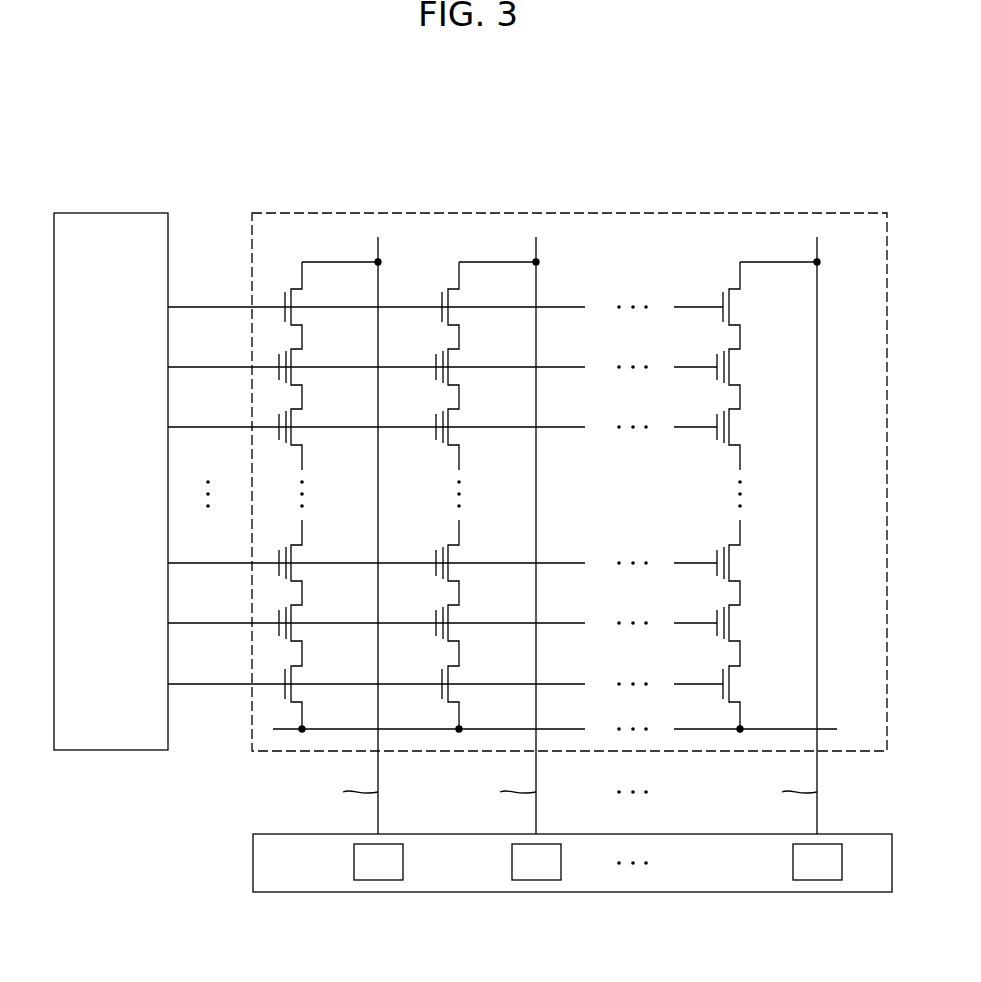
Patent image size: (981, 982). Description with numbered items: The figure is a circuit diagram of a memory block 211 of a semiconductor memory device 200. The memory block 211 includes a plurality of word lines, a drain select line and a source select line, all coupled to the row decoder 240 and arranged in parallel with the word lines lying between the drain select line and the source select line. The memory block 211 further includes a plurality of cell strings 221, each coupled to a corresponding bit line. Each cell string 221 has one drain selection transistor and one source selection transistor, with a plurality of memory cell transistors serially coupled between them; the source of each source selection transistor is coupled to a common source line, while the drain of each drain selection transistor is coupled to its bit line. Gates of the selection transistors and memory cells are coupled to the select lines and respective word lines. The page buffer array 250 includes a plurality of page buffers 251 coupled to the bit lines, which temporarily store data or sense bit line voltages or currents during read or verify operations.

The semiconductor memory device 200 is at (833, 120).
The memory block 211 is at (783, 213).
The cell string 221 is at (290, 250).
The row decoder 240 is at (112, 213).
The page buffer array 250 is at (537, 863).
The page buffer 251 is at (354, 863).